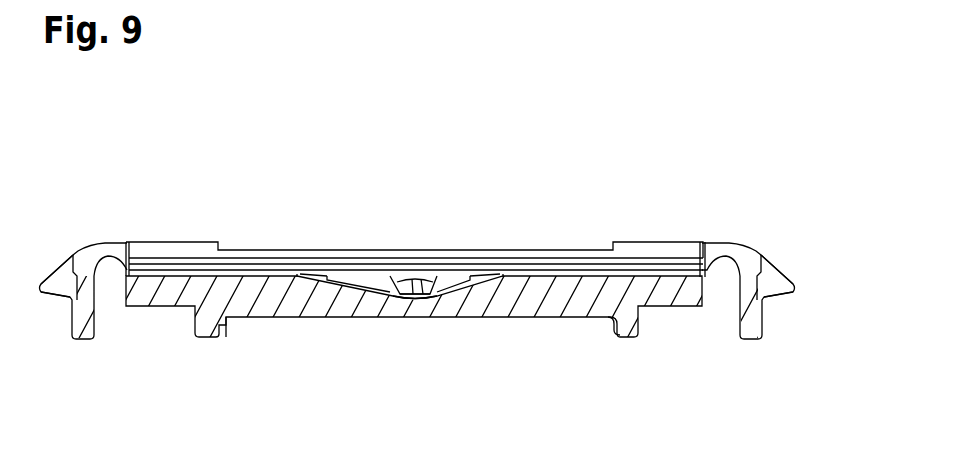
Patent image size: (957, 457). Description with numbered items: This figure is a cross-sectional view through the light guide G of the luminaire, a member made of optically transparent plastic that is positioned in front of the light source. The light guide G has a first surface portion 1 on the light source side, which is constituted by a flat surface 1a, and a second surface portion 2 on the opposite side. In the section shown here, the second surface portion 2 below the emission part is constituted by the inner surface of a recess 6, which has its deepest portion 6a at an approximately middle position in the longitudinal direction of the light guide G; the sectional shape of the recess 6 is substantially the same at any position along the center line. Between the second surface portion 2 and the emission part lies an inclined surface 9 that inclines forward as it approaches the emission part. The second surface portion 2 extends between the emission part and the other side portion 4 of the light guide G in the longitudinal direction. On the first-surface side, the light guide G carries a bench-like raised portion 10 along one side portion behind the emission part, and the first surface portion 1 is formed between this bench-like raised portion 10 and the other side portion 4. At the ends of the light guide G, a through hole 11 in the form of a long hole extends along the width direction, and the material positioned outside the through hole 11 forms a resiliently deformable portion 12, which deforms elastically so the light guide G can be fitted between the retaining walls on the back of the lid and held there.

The first surface portion 1 is at (421, 354).
The flat surface 1a is at (472, 318).
The second surface portion 2 is at (413, 293).
The other side portion 4 is at (404, 0).
The recess 6 is at (452, 284).
The deepest portion 6a is at (409, 299).
The inclined surface 9 is at (378, 283).
The bench-like raised portion 10 is at (537, 336).
The through hole 11 is at (105, 246).
The resiliently deformable portion 12 is at (73, 248).
The light guide G is at (551, 226).